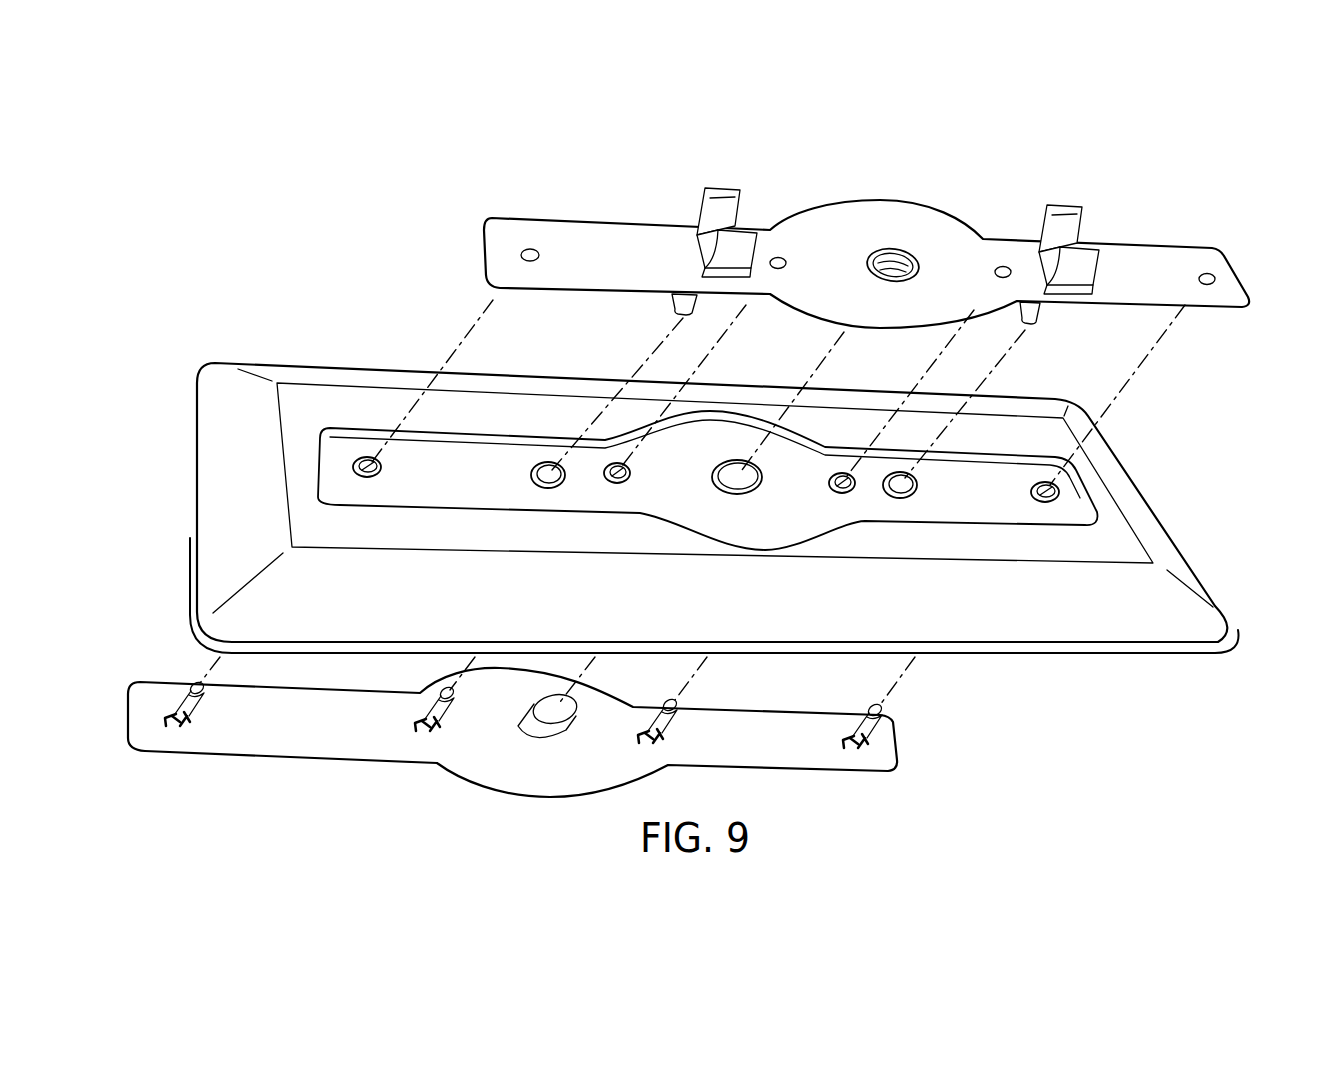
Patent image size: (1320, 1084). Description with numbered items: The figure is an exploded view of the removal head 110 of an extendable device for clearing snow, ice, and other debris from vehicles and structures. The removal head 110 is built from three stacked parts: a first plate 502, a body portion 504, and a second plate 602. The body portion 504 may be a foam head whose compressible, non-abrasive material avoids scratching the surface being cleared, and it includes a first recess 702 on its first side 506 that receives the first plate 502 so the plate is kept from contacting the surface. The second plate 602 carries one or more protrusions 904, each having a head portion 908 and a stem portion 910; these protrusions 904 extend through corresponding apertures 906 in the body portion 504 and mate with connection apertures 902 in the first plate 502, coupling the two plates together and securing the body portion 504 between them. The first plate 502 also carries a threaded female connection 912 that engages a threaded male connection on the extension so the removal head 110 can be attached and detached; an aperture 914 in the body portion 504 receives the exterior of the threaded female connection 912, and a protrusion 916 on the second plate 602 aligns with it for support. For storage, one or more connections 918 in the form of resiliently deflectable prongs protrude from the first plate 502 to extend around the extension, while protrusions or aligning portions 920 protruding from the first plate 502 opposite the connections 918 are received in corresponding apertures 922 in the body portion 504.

The removal head 110 is at (1295, 491).
The first plate 502 is at (610, 238).
The threaded female connection 912 is at (893, 258).
The connections 918 is at (1063, 210).
The connection apertures 902 is at (1207, 278).
The protrusions or aligning portions 920 is at (1030, 314).
The body portion 504 is at (197, 462).
The first side 506 is at (308, 515).
The first recess 702 is at (350, 450).
The aperture 914 is at (737, 470).
The apertures 922 is at (920, 485).
The apertures 906 is at (1065, 500).
The second plate 602 is at (243, 737).
The protrusions 904 is at (425, 737).
The protrusion 916 is at (540, 737).
The head portion 908 is at (879, 712).
The stem portion 910 is at (873, 733).